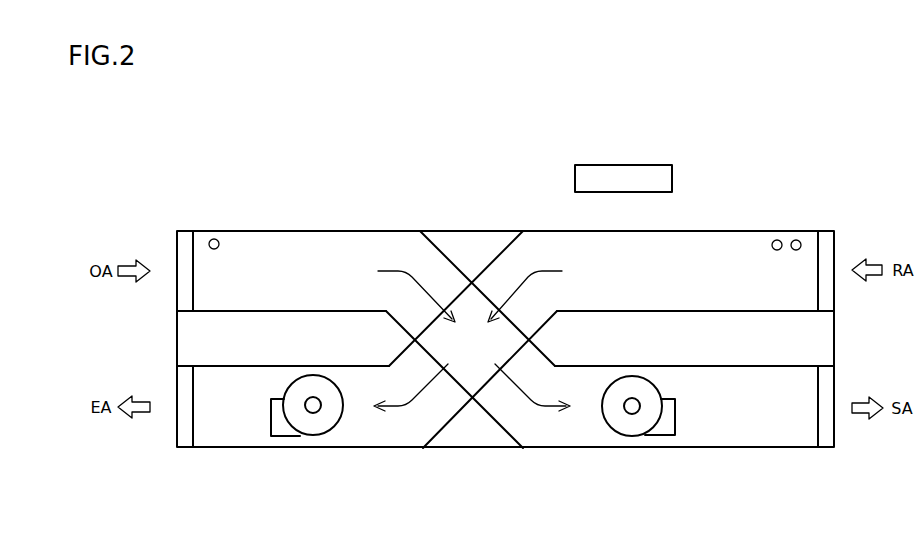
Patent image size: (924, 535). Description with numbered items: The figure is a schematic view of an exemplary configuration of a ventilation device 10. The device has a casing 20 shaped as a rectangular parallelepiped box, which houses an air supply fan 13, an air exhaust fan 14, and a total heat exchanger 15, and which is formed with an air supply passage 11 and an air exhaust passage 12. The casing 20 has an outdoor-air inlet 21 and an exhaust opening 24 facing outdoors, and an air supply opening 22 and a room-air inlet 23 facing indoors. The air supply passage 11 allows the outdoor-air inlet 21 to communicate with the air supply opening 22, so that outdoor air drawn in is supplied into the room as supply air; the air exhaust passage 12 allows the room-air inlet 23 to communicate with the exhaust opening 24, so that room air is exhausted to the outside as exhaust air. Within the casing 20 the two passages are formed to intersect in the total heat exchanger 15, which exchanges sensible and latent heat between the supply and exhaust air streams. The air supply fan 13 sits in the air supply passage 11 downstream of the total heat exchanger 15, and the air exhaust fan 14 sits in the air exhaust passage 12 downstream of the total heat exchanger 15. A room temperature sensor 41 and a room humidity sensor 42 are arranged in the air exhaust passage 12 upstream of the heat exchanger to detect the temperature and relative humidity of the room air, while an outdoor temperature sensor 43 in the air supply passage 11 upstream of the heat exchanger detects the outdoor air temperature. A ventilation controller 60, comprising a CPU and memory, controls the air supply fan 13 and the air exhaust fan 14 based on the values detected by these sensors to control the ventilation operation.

The ventilation device 10 is at (732, 143).
The air supply passage 11 is at (553, 427).
The air exhaust passage 12 is at (392, 427).
The air supply fan 13 is at (632, 430).
The air exhaust fan 14 is at (313, 428).
The total heat exchanger 15 is at (468, 380).
The casing 20 is at (477, 230).
The outdoor-air inlet 21 is at (177, 257).
The air supply opening 22 is at (834, 423).
The room-air inlet 23 is at (834, 257).
The exhaust opening 24 is at (177, 423).
The room temperature sensor 41 is at (777, 240).
The room humidity sensor 42 is at (796, 240).
The outdoor temperature sensor 43 is at (214, 239).
The ventilation controller 60 is at (631, 165).